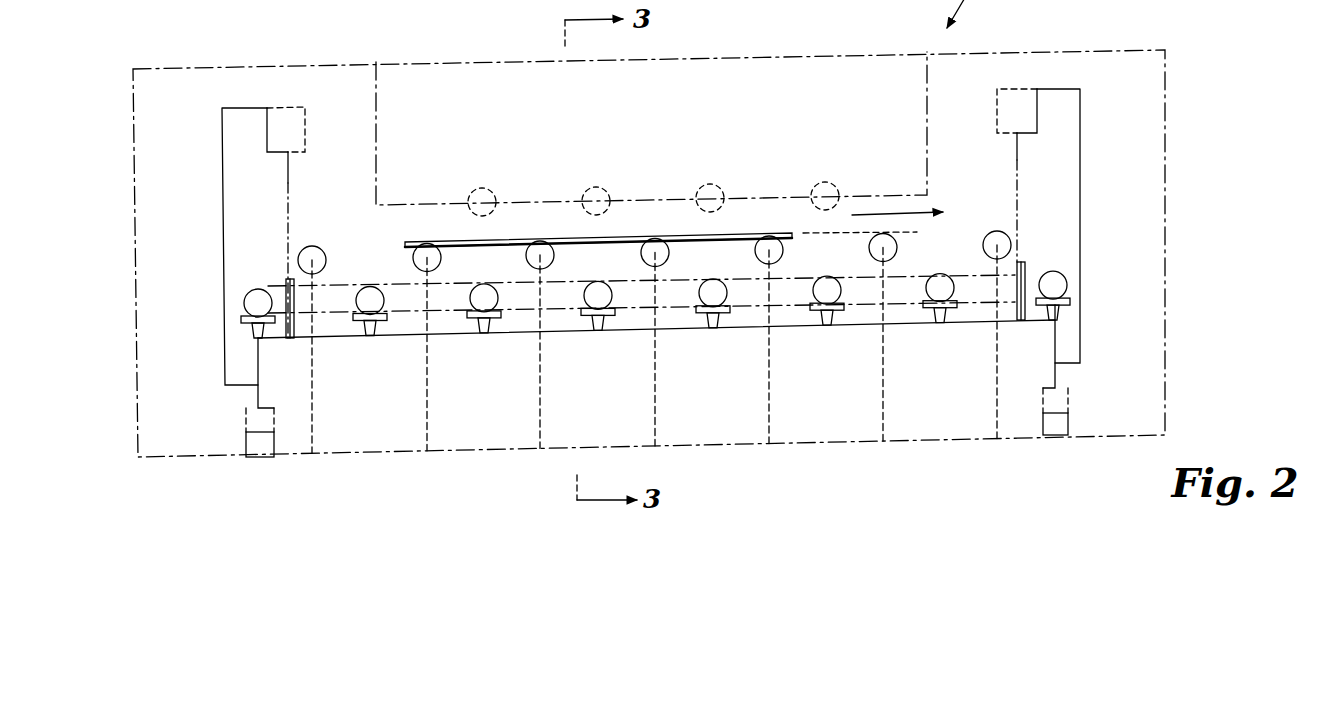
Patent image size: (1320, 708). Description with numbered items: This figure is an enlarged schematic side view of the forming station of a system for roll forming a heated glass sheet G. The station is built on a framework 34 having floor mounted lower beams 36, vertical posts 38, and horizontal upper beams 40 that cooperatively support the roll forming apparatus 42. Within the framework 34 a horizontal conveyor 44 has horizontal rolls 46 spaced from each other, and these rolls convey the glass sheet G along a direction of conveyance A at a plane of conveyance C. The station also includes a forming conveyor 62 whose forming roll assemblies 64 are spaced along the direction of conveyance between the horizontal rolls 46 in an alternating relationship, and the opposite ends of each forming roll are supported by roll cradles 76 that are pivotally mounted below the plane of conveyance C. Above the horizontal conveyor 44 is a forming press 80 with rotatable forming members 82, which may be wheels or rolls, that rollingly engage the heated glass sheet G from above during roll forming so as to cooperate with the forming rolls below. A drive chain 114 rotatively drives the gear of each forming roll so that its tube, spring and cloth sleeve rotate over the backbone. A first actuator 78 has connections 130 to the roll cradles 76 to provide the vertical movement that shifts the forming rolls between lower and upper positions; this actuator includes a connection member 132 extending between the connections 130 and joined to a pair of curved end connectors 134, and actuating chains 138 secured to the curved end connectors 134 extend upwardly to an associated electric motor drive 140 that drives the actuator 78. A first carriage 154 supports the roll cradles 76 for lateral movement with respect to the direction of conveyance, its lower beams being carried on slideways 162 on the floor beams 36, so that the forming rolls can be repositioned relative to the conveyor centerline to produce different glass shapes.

The framework 34 is at (1180, 92).
The lower beams 36 is at (273, 440).
The vertical posts 38 is at (133, 215).
The horizontal upper beams 40 is at (742, 55).
The roll forming apparatus 42 is at (197, 138).
The horizontal conveyor 44 is at (1027, 256).
The horizontal rolls 46 is at (533, 250).
The forming conveyor 62 is at (1097, 272).
The forming roll assemblies 64 is at (318, 334).
The roll cradles 76 is at (262, 338).
The first actuator 78 is at (286, 195).
The forming press 80 is at (927, 118).
The rotatable forming members 82 is at (493, 193).
The drive chain 114 is at (413, 281).
The connections 130 is at (255, 337).
The connection member 132 is at (596, 330).
The curved end connectors 134 is at (288, 285).
The actuating chains 138 is at (290, 183).
The electric motor drive 140 is at (278, 130).
The first carriage 154 is at (240, 407).
The slideways 162 is at (247, 433).
The glass sheet G is at (648, 232).
The direction of conveyance A is at (897, 213).
The plane of conveyance C is at (833, 233).